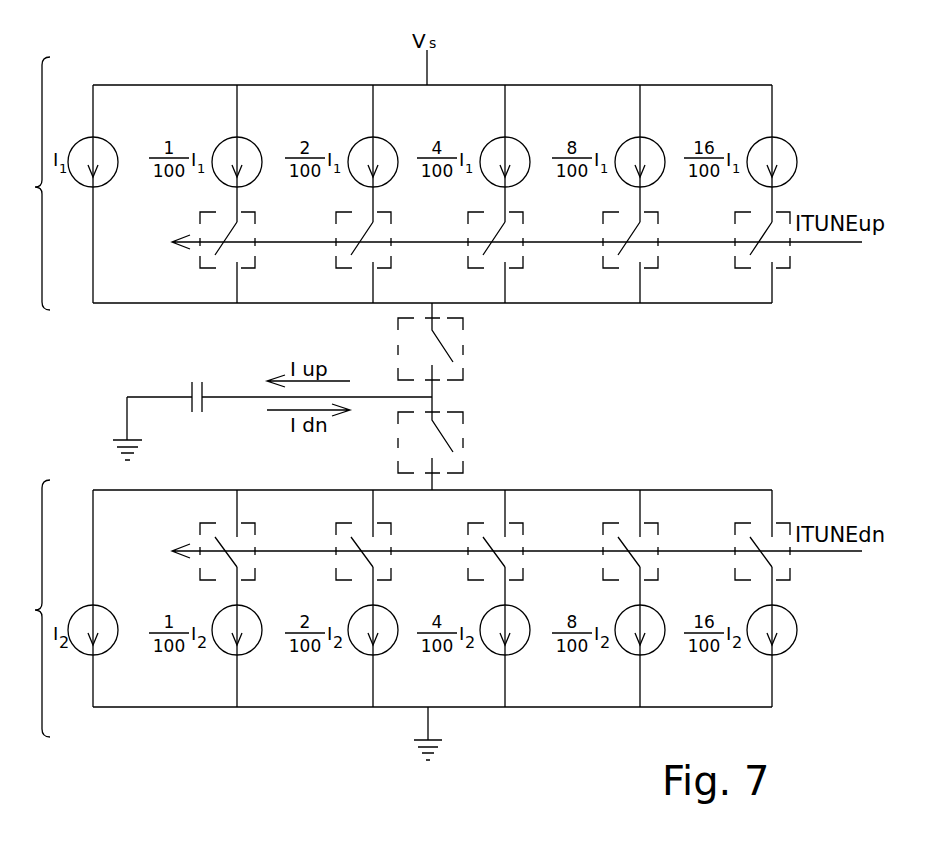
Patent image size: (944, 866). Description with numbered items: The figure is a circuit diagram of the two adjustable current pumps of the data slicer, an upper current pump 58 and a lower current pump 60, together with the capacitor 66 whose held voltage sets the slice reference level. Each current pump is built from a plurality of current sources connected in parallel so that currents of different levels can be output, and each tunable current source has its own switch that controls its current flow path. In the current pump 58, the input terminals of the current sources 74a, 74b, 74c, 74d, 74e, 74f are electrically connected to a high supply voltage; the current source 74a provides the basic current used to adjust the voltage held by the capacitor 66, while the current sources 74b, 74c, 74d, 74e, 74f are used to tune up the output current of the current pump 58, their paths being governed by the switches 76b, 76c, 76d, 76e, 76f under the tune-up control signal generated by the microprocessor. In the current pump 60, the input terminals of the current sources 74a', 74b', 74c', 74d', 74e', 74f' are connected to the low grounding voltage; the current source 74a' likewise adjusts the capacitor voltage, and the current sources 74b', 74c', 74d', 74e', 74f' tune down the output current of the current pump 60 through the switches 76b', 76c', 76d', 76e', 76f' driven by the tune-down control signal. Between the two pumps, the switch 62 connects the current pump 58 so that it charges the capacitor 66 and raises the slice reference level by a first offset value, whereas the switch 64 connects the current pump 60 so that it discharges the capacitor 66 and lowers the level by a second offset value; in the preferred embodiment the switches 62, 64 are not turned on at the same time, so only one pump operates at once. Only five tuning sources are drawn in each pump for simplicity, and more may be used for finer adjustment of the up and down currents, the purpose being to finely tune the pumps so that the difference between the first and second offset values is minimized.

The current pump 58 is at (32, 183).
The current pump 60 is at (30, 608).
The switch 62 is at (463, 350).
The switch 64 is at (463, 440).
The capacitor 66 is at (192, 370).
The current source 74a is at (82, 129).
The current source 74b is at (198, 141).
The current source 74c is at (334, 141).
The current source 74d is at (466, 141).
The current source 74e is at (601, 141).
The current source 74f is at (733, 141).
The switch 76b is at (194, 255).
The switch 76c is at (330, 255).
The switch 76d is at (462, 255).
The switch 76e is at (597, 255).
The switch 76f is at (729, 255).
The current source 74a' is at (82, 667).
The current source 74b' is at (198, 654).
The current source 74c' is at (334, 654).
The current source 74d' is at (466, 654).
The current source 74e' is at (601, 654).
The current source 74f' is at (733, 654).
The switch 76b' is at (191, 539).
The switch 76c' is at (327, 539).
The switch 76d' is at (459, 539).
The switch 76e' is at (594, 539).
The switch 76f' is at (726, 539).